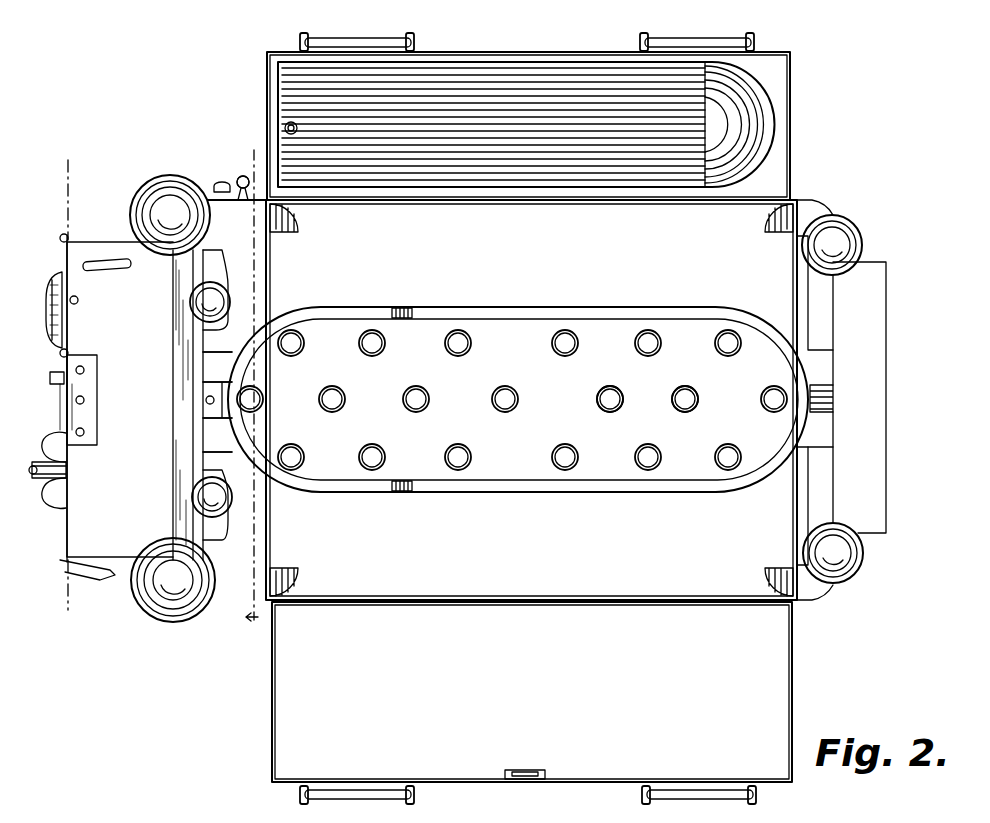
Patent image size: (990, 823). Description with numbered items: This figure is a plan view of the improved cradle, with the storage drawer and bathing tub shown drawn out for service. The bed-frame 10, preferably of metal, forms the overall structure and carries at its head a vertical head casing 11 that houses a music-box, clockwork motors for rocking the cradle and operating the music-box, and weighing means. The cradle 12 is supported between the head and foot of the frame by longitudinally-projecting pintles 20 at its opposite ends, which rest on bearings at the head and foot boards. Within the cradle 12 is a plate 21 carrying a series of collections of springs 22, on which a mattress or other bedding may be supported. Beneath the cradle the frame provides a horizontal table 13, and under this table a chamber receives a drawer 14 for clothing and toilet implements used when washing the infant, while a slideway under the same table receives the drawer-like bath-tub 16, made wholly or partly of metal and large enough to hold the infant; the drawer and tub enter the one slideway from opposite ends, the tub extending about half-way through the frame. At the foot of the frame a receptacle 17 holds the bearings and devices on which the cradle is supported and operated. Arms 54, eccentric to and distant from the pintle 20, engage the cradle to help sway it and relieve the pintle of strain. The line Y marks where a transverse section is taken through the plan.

The bed-frame 10 is at (499, 598).
The head casing 11 is at (147, 391).
The cradle 12 is at (518, 399).
The horizontal table 13 is at (521, 385).
The drawer 14 is at (532, 703).
The bath-tub 16 is at (528, 116).
The foot receptacle 17 is at (841, 400).
The pintles 20 is at (836, 400).
The plate 21 is at (512, 400).
The springs 22 is at (676, 408).
The arms 54 is at (217, 402).
The section line y Y is at (246, 170).